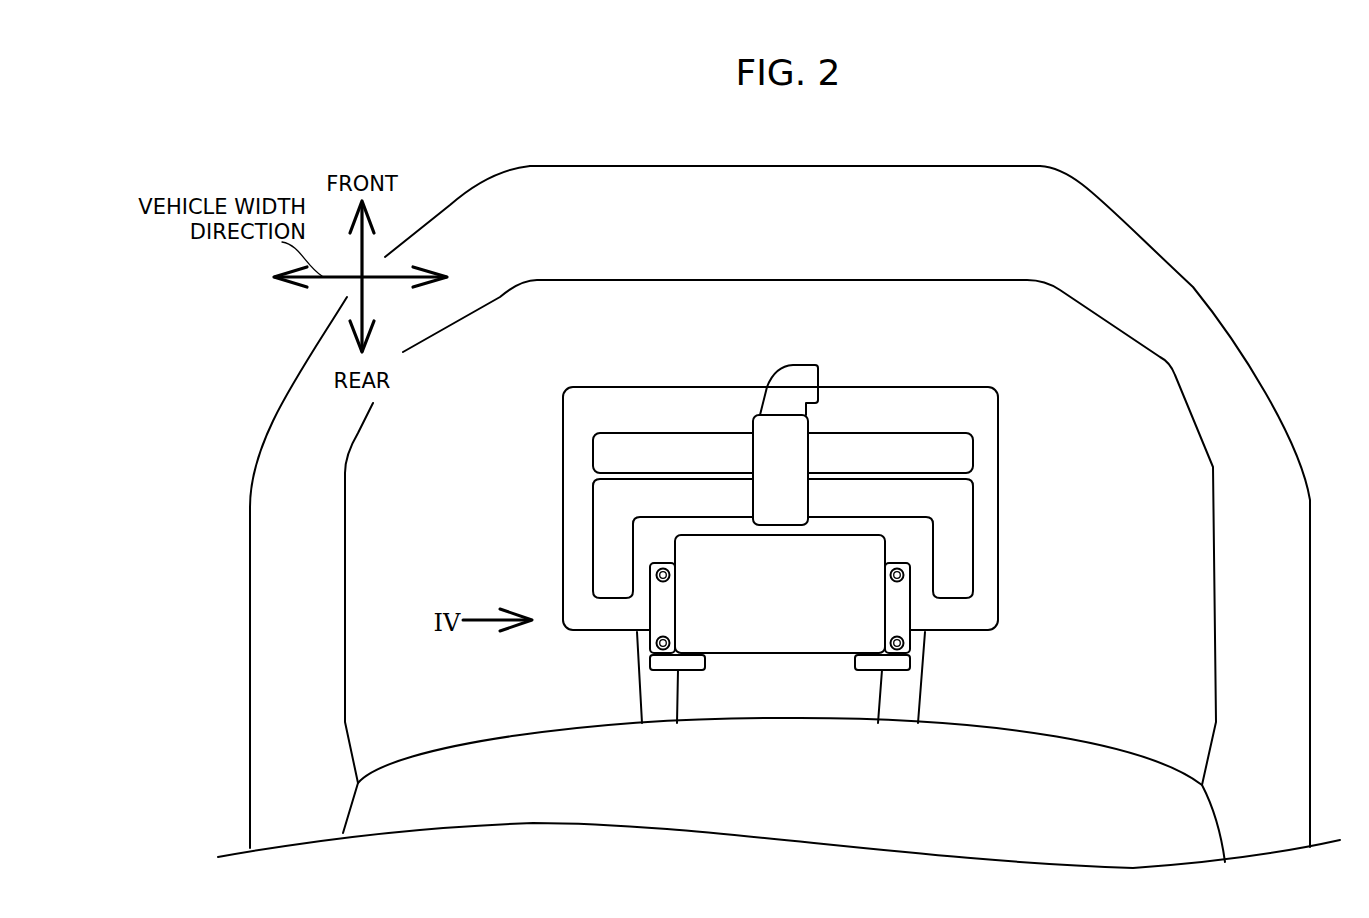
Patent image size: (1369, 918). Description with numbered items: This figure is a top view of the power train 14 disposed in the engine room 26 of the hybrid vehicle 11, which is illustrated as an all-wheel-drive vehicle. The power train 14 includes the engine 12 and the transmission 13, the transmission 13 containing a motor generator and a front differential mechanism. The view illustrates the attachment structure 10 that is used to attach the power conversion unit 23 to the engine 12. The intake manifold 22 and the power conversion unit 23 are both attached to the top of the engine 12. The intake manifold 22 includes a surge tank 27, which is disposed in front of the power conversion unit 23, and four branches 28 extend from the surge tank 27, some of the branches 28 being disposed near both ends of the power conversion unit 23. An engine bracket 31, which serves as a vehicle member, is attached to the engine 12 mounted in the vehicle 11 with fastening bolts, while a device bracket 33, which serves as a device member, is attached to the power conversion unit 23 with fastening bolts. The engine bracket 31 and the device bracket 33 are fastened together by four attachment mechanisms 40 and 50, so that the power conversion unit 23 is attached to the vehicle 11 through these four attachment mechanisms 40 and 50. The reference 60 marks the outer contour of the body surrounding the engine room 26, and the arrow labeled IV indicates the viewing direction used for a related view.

The attachment structure 10 is at (807, 654).
The hybrid vehicle 11 is at (1194, 199).
The engine 12 is at (894, 392).
The transmission 13 is at (807, 722).
The power train 14 is at (991, 322).
The intake manifold 22 is at (785, 472).
The power conversion unit 23 is at (753, 623).
The engine room 26 is at (1139, 531).
The surge tank 27 is at (778, 438).
The branches 28 is at (607, 517).
The engine bracket 31 is at (677, 723).
The device bracket 33 is at (657, 602).
The attachment mechanism 40 is at (887, 573).
The attachment mechanism 50 is at (672, 573).
The roof 60 is at (915, 192).